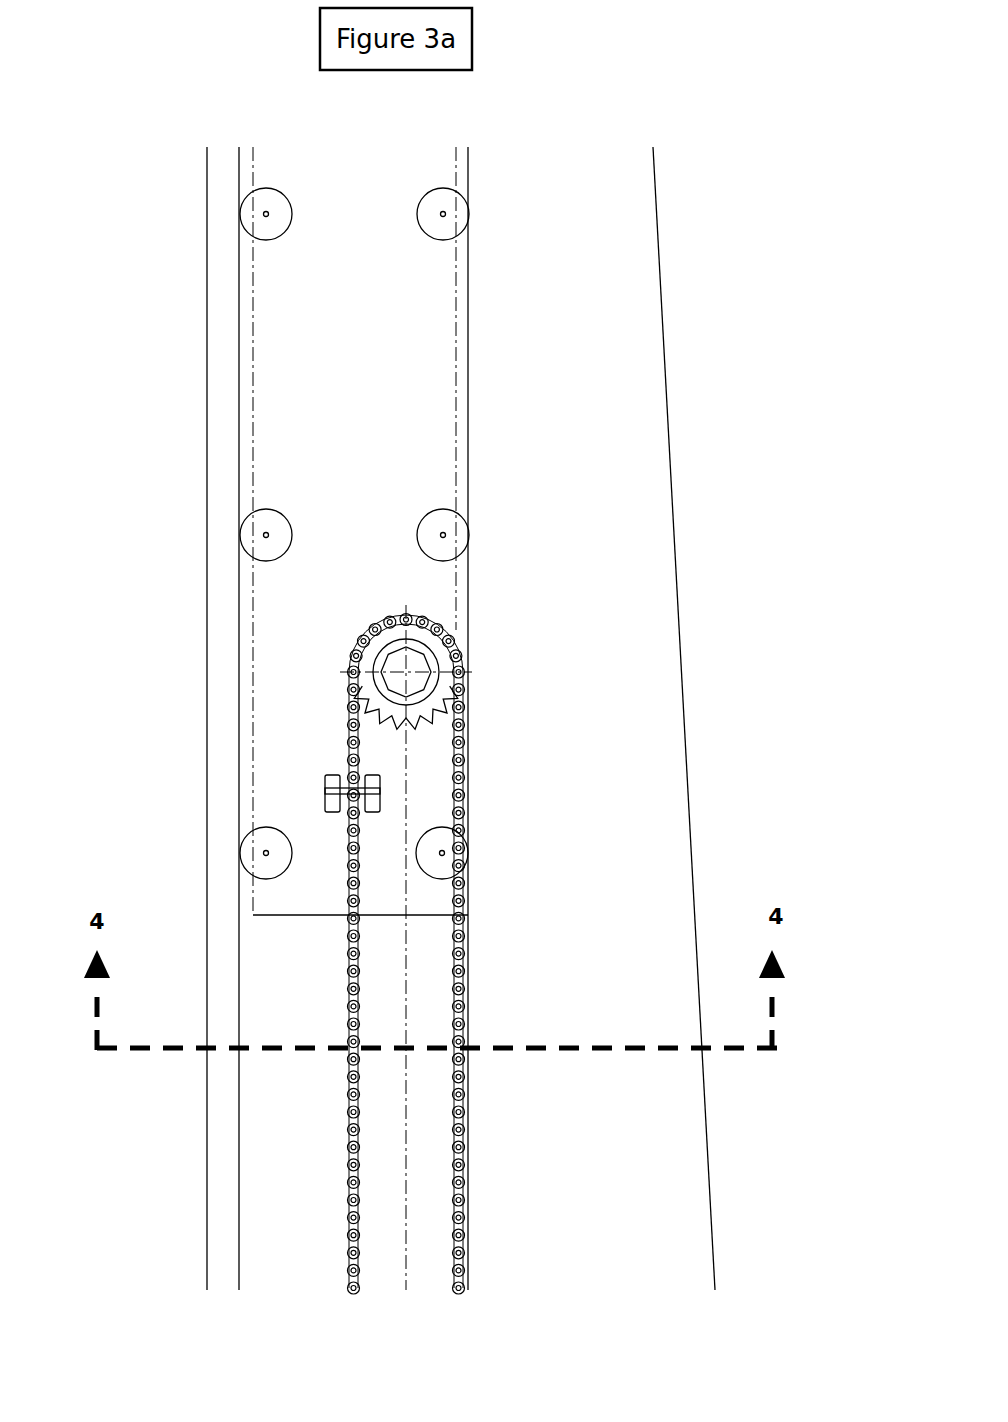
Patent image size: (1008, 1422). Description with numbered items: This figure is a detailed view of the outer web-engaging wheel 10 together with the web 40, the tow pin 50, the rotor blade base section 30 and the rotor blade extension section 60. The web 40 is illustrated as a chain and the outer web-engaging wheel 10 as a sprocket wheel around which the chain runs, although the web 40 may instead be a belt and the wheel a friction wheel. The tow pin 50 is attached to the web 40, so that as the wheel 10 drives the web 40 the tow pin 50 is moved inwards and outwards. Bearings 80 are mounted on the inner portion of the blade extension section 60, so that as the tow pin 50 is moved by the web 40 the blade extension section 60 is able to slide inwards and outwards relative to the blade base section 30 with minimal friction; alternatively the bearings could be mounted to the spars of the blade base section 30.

The outer web-engaging wheel 10 is at (459, 641).
The rotor blade base section 30 is at (668, 345).
The web 40 is at (467, 1225).
The tow pin 50 is at (386, 791).
The rotor blade extension section 60 is at (248, 450).
The bearings 80 is at (252, 533).